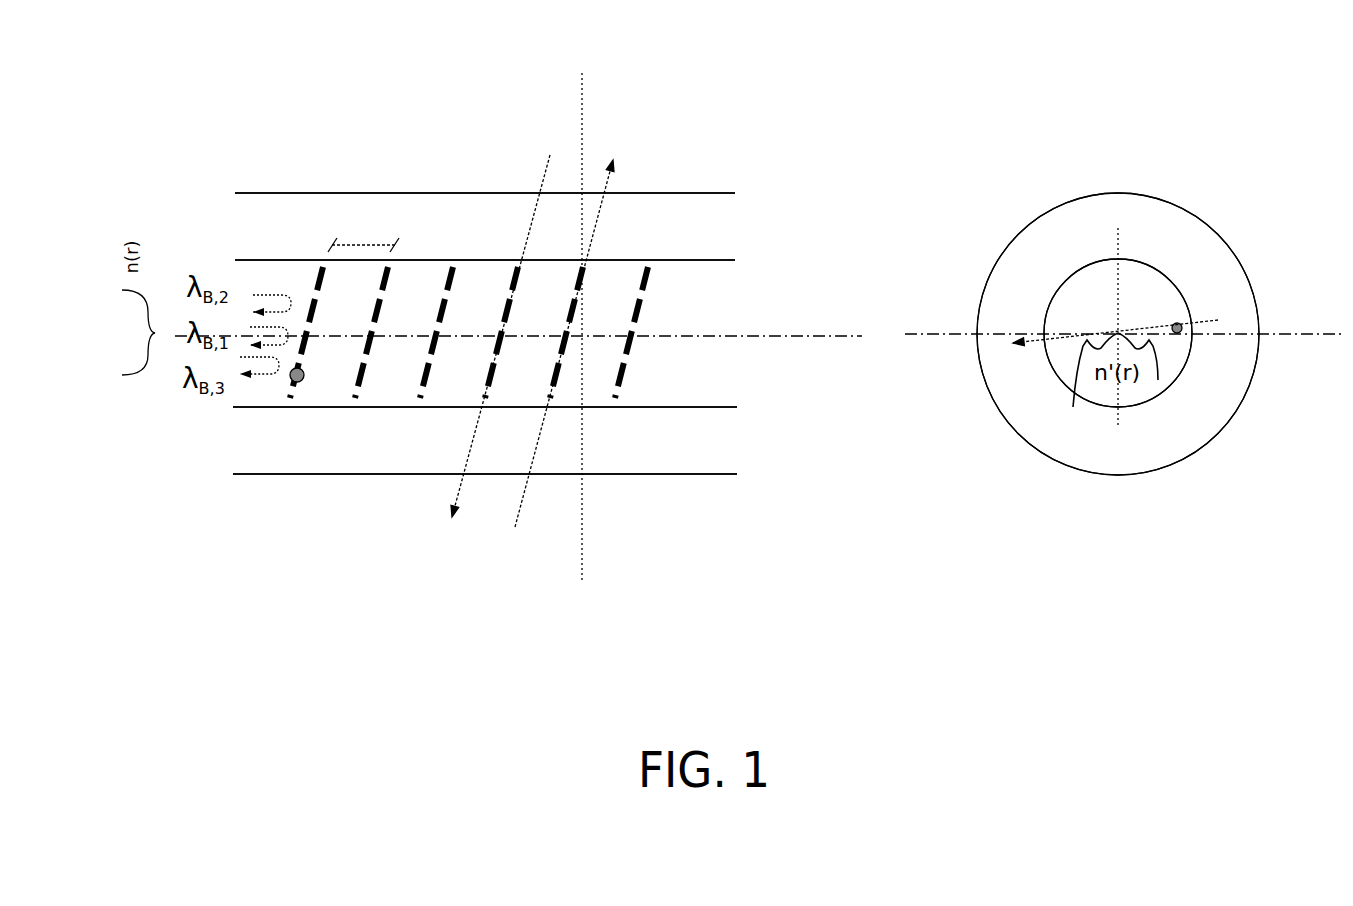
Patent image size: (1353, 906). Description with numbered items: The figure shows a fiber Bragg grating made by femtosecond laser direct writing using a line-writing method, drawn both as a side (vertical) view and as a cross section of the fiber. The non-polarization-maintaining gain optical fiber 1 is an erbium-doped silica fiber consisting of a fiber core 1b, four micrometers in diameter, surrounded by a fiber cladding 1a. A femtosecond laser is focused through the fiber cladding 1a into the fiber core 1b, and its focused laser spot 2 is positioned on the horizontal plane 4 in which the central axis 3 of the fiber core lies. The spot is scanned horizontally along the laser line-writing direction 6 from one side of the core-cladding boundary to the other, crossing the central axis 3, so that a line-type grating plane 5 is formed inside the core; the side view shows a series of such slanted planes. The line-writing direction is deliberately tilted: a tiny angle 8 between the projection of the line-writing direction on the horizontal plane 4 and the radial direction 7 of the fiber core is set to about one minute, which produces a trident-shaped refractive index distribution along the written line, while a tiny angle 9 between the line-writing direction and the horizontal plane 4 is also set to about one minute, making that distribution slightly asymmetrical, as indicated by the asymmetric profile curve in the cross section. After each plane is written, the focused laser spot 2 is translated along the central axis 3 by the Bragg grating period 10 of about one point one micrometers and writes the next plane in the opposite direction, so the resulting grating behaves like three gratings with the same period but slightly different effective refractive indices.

The non-polarization-maintaining gain optical fiber 1 is at (746, 324).
The fiber cladding 1a is at (746, 334).
The fiber core 1b is at (712, 333).
The focused laser spot 2 is at (293, 378).
The central axis of fiber core 3 is at (518, 318).
The horizontal plane where a central axis of a fiber core is located 4 is at (1125, 318).
The line-type grating plane 5 is at (348, 398).
The laser line-writing direction 6 is at (875, 329).
The radial direction of fiber core 7 is at (845, 307).
The tiny angle between projection of laser line-writing direction and radial directi 8 is at (598, 178).
The tiny angle between laser line-writing direction and horizontal plane of fiber co 9 is at (1036, 338).
The Bragg grating period 10 is at (363, 228).